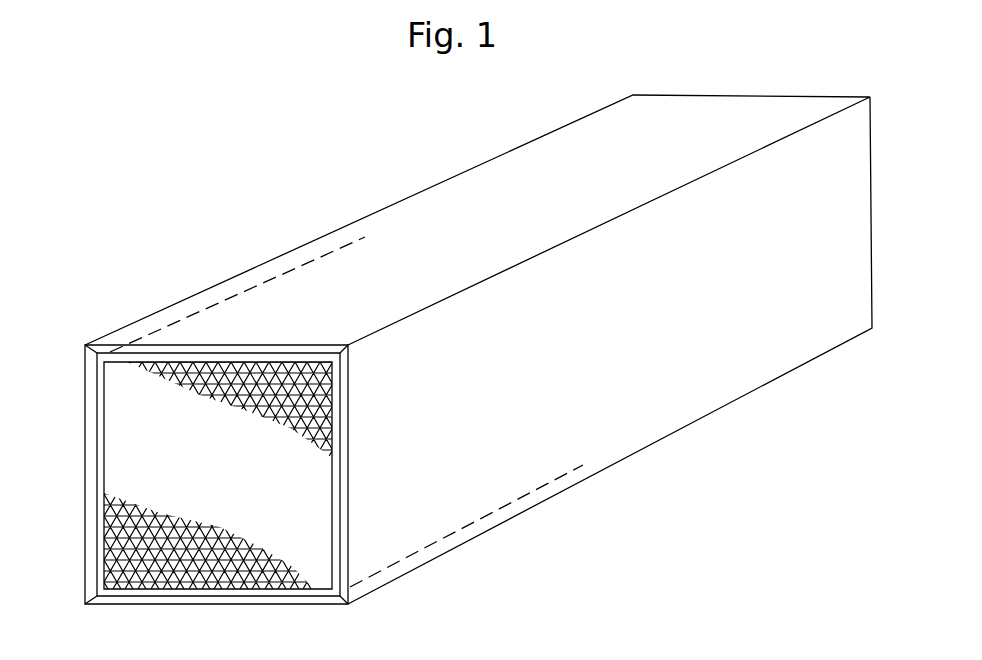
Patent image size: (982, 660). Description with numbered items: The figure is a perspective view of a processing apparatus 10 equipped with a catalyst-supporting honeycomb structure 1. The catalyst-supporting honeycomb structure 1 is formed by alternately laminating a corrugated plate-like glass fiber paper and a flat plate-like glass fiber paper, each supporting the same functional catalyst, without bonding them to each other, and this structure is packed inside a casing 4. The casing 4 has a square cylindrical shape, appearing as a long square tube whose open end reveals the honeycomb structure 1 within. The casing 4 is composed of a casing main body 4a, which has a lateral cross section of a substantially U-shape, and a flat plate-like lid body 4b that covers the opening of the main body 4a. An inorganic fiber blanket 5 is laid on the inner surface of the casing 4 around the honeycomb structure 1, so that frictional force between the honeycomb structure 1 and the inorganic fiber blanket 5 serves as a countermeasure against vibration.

The catalyst-supporting honeycomb structure 1 is at (198, 490).
The casing 4 is at (615, 438).
The casing main body 4a is at (343, 552).
The lid body 4b is at (190, 350).
The inorganic fiber blanket 5 is at (112, 350).
The processing apparatus 10 is at (349, 194).